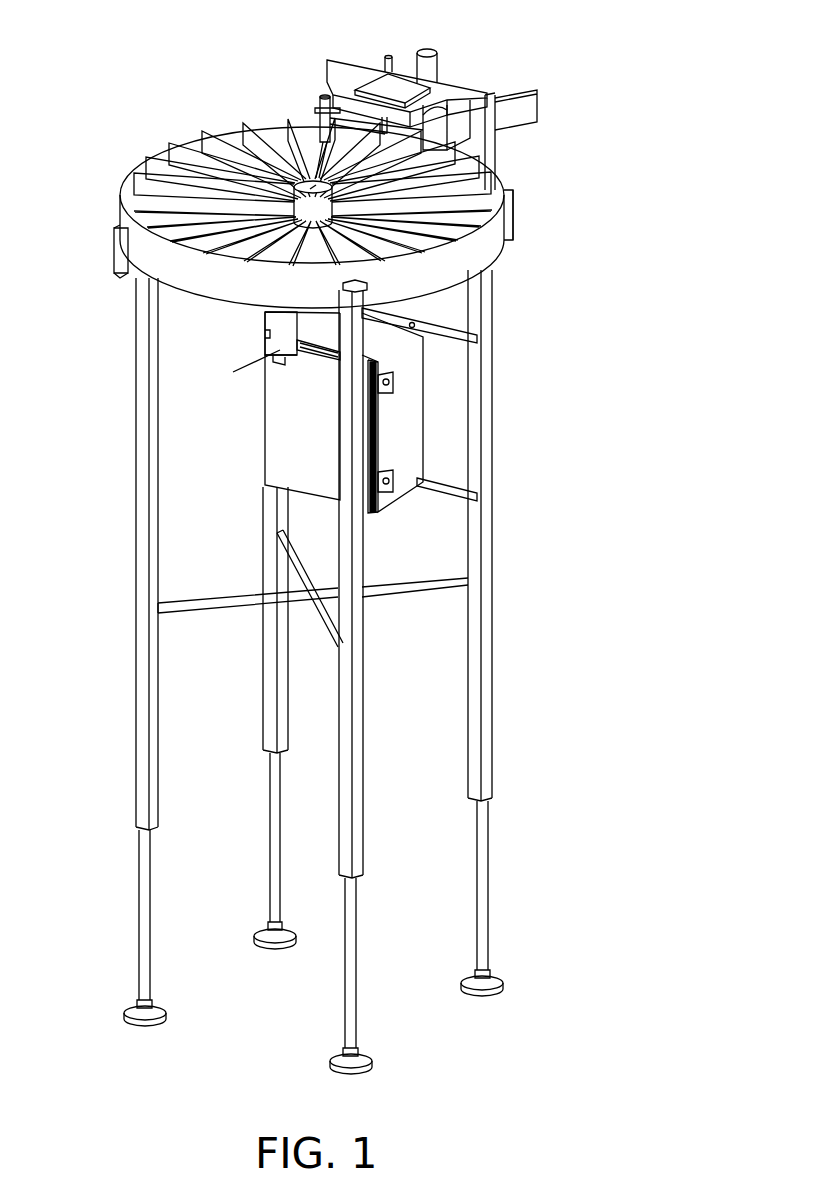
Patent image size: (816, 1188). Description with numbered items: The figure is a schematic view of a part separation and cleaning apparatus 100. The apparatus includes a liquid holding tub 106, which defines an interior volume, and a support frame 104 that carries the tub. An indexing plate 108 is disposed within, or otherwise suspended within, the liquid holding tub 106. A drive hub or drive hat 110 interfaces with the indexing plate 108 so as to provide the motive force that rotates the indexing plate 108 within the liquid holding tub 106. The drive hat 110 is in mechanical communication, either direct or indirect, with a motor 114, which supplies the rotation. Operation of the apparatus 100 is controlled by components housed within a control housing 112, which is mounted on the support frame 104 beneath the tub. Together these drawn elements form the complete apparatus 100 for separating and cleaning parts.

The part separation and cleaning apparatus 100 is at (530, 176).
The support frame 104 is at (505, 578).
The liquid holding tub 106 is at (175, 160).
The indexing plate 108 is at (267, 170).
The drive hat 110 is at (298, 177).
The control housing 112 is at (405, 418).
The motor 114 is at (268, 350).